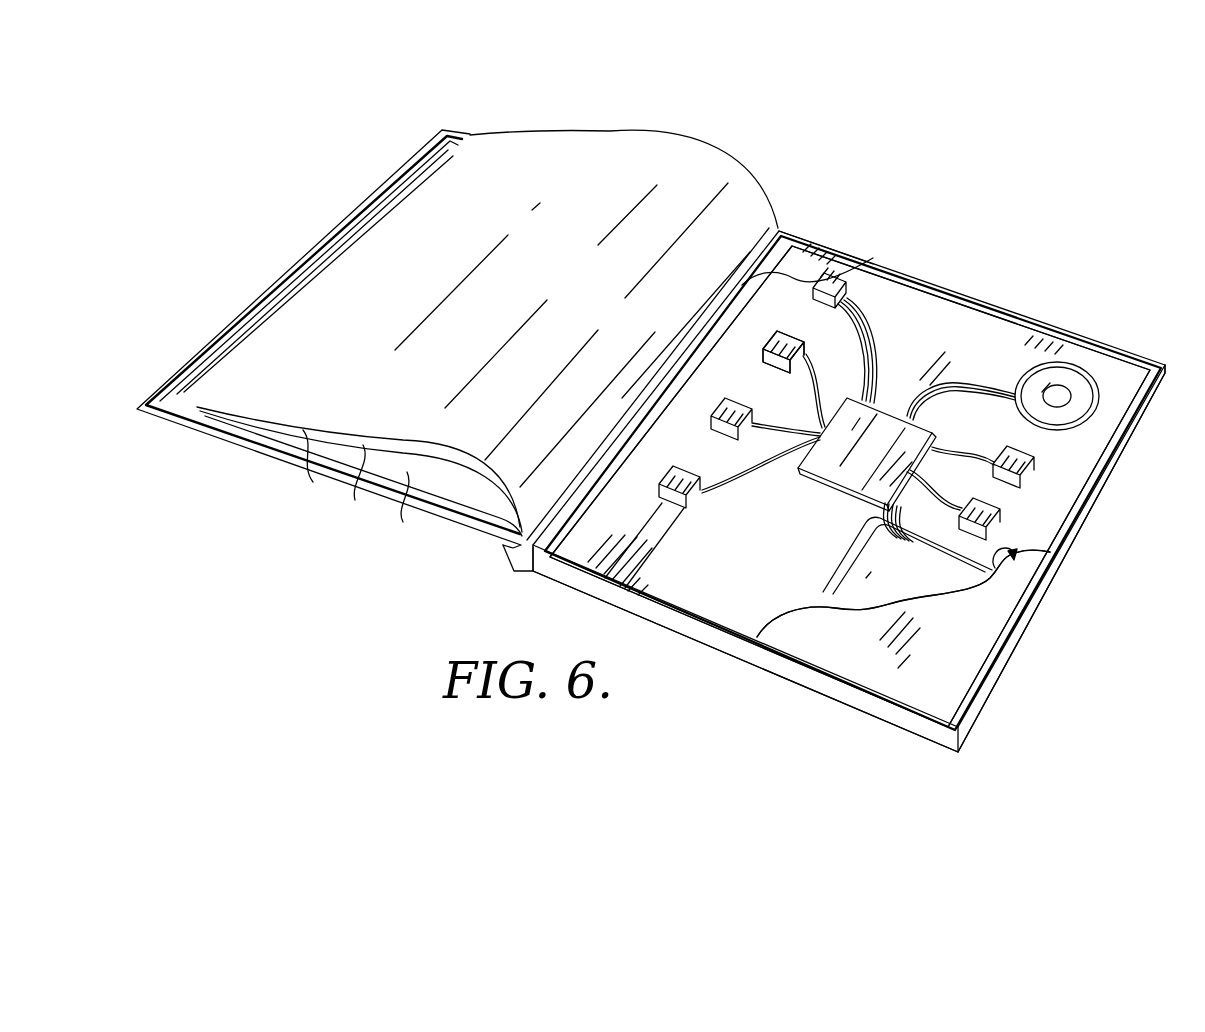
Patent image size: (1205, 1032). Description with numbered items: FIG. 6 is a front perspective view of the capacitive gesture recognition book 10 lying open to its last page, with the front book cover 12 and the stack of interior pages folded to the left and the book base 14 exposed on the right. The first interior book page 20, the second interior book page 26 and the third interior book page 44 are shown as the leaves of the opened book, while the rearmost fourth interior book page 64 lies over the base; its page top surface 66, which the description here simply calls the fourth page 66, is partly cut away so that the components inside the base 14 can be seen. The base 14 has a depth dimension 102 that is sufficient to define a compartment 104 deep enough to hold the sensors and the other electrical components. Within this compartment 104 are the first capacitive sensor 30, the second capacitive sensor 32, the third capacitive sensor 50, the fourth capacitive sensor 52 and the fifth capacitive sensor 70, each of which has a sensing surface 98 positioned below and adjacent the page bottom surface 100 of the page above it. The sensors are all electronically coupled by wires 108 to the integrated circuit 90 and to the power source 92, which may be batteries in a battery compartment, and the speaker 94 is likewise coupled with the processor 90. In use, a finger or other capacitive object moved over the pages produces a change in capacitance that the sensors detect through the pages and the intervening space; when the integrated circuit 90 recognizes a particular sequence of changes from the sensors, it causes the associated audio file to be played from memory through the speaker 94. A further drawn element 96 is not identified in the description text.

The capacitive gesture recognition book 10 is at (694, 80).
The front book cover 12 is at (228, 441).
The book base 14 is at (820, 688).
The first interior book page 20 is at (403, 522).
The second interior book page 26 is at (355, 500).
The first capacitive sensor 30 is at (717, 432).
The second capacitive sensor 32 is at (660, 497).
The third interior book page 44 is at (313, 482).
The third capacitive sensor 50 is at (768, 366).
The fourth capacitive sensor 52 is at (1034, 472).
The fourth interior book page 64 is at (797, 233).
The page top surface 66 is at (802, 280).
The fifth capacitive sensor 70 is at (1000, 525).
The integrated circuit 90 is at (845, 487).
The power source 92 is at (828, 576).
The speaker 94 is at (1098, 394).
The connector 96 is at (848, 291).
The sensing surface 98 is at (786, 341).
The page bottom surface 100 is at (994, 577).
The depth dimension 102 is at (980, 727).
The compartment 104 is at (739, 609).
The wires 108 is at (866, 349).